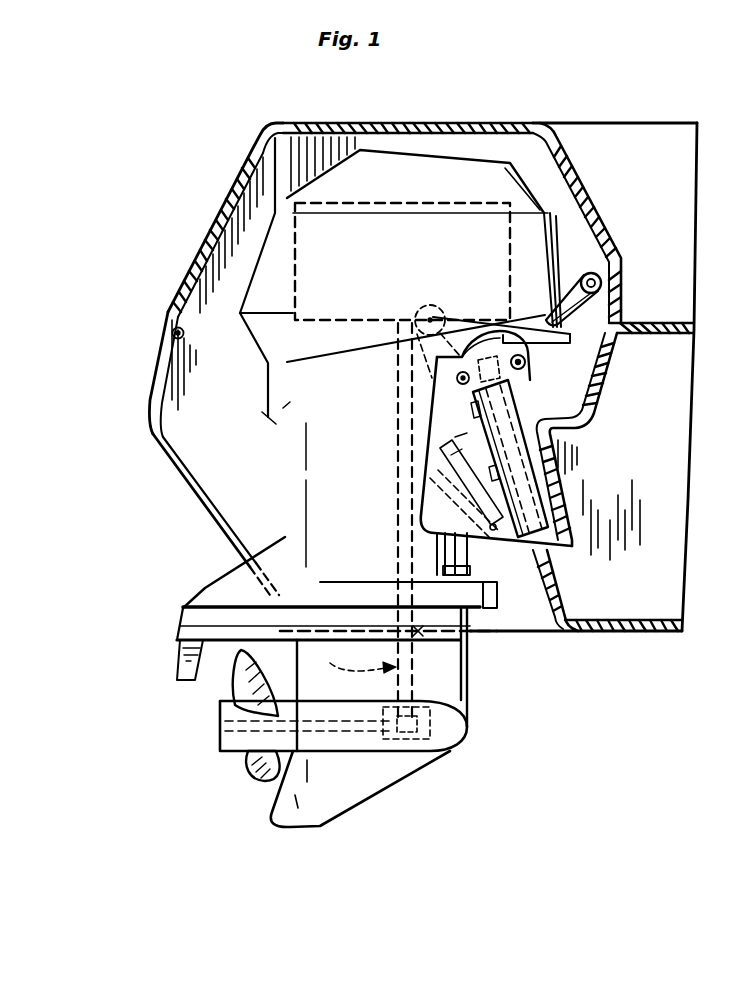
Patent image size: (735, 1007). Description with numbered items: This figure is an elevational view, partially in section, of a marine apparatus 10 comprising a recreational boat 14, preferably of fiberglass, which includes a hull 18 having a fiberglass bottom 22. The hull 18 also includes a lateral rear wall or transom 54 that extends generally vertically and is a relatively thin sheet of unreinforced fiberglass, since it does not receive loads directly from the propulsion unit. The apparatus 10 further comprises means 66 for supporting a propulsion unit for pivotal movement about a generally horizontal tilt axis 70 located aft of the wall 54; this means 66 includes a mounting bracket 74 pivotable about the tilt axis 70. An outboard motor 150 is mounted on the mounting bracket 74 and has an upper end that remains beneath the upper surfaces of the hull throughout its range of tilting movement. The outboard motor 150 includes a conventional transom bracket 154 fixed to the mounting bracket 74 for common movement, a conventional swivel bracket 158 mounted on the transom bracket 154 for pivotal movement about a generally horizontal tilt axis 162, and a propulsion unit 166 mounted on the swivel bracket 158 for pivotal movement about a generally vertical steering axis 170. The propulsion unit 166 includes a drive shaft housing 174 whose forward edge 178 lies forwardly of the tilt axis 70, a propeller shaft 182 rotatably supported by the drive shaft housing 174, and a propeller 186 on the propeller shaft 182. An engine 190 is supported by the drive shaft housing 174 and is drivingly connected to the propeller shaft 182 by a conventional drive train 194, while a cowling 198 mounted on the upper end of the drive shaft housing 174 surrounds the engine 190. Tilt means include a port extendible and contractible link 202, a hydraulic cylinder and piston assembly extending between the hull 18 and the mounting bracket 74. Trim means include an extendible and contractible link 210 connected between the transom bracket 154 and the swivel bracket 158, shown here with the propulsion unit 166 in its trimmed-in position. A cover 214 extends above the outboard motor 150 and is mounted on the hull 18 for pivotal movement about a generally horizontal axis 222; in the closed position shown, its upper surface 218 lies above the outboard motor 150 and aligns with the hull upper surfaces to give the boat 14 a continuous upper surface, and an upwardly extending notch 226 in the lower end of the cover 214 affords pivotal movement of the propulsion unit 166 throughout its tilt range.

The marine apparatus 10 is at (166, 174).
The recreational boat 14 is at (620, 134).
The hull 18 is at (663, 382).
The bottom 22 is at (626, 633).
The lateral rear wall 54 is at (590, 207).
The means for supporting a propulsion unit 66 is at (556, 404).
The tilt axis 70 is at (436, 306).
The mounting bracket 74 is at (504, 570).
The outboard motor 150 is at (175, 617).
The transom bracket 154 is at (427, 507).
The swivel bracket 158 is at (433, 537).
The tilt axis 162 is at (527, 360).
The propulsion unit 166 is at (273, 467).
The steering axis 170 is at (447, 588).
The drive shaft housing 174 is at (273, 421).
The forward edge 178 is at (455, 378).
The propeller shaft 182 is at (357, 727).
The propeller 186 is at (250, 773).
The engine 190 is at (415, 214).
The drive train 194 is at (388, 649).
The cowling 198 is at (267, 272).
The first extendible and contractible link 202 is at (600, 307).
The extendible and contractible link 210 is at (427, 483).
The cover 214 is at (420, 122).
The upper surface 218 is at (345, 110).
The horizontal axis 222 is at (172, 333).
The notch 226 is at (160, 370).